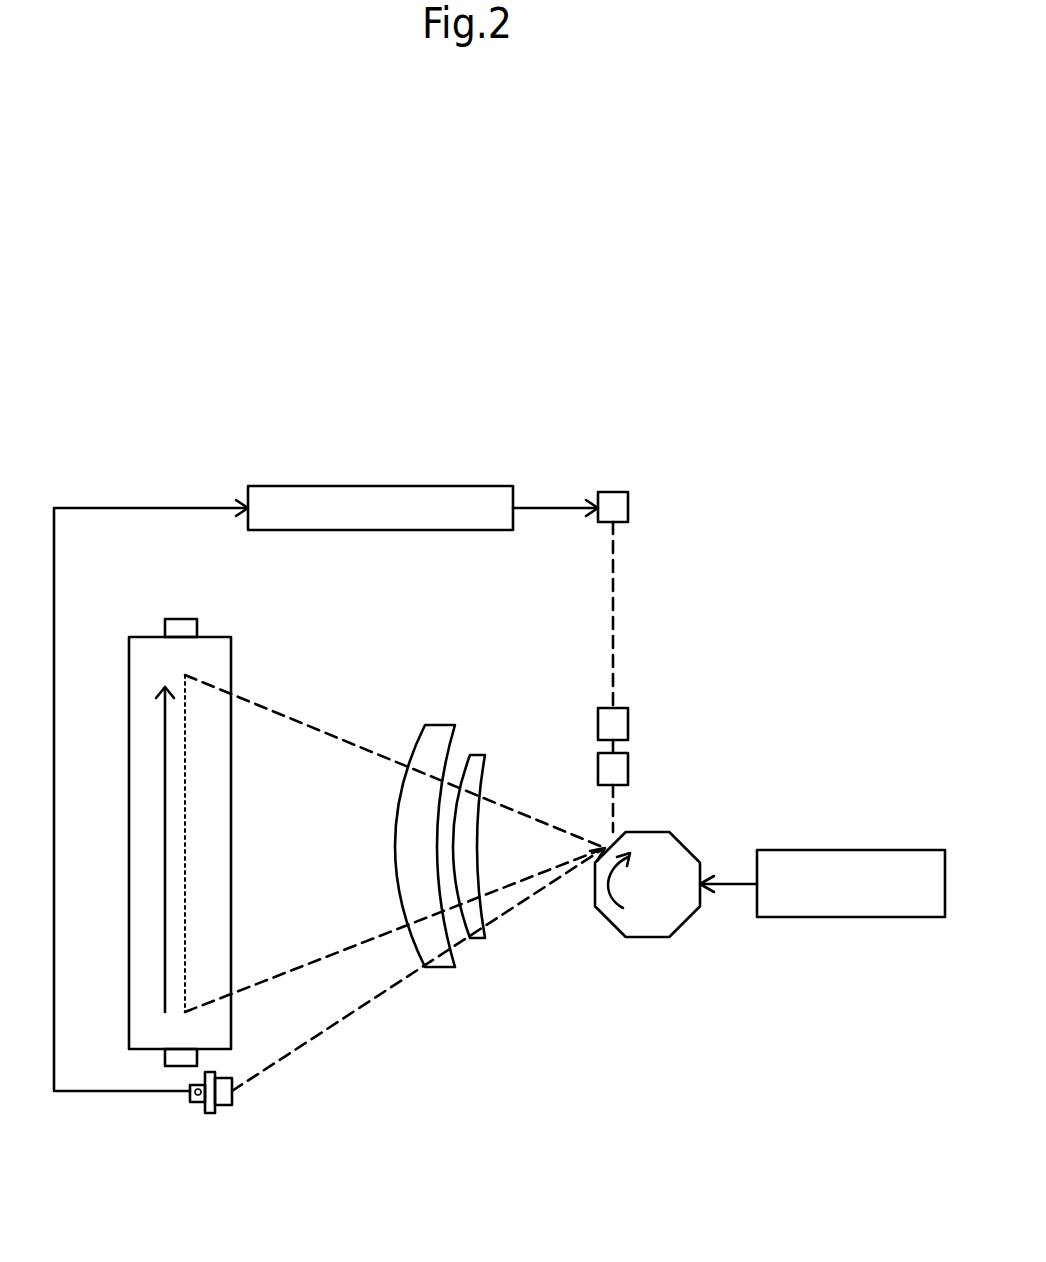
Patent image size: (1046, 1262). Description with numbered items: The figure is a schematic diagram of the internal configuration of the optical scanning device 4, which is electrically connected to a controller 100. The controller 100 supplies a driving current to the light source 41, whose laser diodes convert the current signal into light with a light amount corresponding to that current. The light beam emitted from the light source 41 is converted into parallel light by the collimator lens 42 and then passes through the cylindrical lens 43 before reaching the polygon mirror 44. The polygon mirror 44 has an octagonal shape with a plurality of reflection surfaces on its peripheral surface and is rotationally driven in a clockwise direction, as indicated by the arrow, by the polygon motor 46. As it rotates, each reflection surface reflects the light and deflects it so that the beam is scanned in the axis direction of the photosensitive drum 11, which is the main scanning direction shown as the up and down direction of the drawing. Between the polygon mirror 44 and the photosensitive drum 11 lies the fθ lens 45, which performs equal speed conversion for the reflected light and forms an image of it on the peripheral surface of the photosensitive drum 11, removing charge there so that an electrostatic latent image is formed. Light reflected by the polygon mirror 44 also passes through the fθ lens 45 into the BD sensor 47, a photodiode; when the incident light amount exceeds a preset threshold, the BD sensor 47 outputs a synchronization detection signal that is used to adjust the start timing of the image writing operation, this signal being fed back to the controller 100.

The controller 100 is at (370, 486).
The photosensitive drum 11 is at (129, 668).
The light source 41 is at (628, 508).
The collimator lens 42 is at (628, 725).
The cylindrical lens 43 is at (628, 770).
The polygon mirror 44 is at (648, 937).
The fθ lens 45 is at (472, 985).
The polygon motor 46 is at (850, 917).
The beam detect sensor 47 is at (198, 1107).
The optical scanning device 4 is at (360, 1065).